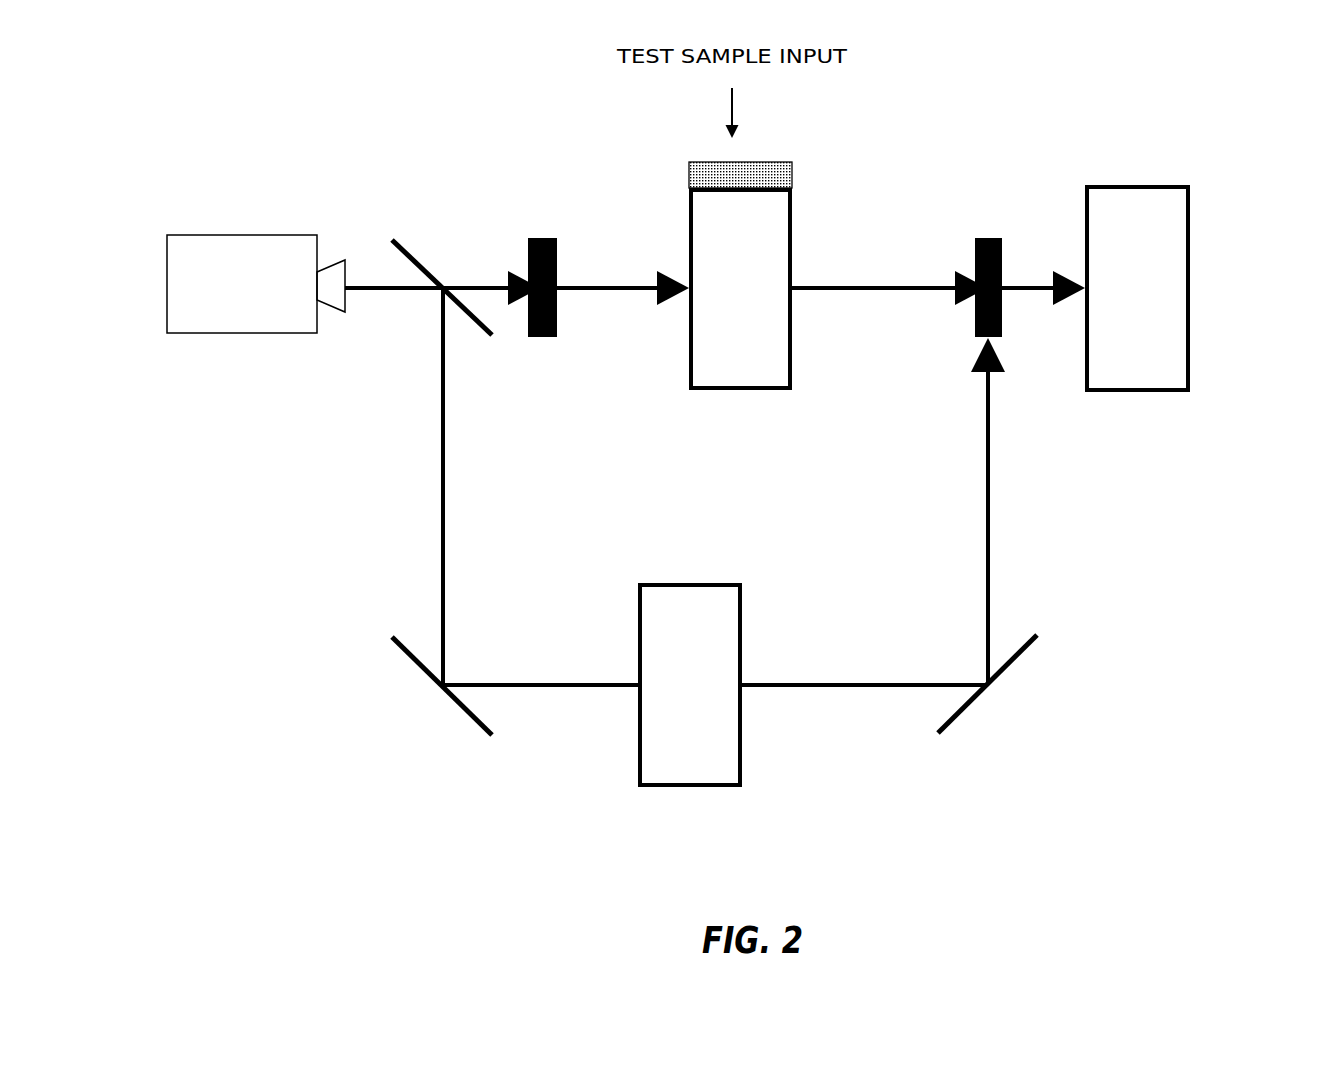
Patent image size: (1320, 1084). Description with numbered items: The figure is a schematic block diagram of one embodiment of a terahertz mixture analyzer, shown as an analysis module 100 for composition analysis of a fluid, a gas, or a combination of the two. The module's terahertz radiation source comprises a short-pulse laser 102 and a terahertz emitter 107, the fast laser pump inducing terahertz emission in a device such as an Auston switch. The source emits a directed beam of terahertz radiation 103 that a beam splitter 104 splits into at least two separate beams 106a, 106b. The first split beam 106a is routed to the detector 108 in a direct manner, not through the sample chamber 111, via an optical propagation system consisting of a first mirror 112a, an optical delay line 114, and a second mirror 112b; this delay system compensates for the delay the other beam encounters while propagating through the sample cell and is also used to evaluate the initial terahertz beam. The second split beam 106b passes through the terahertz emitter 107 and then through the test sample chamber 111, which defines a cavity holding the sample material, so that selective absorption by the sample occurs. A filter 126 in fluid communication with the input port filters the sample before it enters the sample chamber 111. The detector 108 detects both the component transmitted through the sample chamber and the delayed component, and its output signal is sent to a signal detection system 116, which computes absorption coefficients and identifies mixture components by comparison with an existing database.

The analysis module 100 is at (1089, 120).
The short-pulse laser 102 is at (195, 235).
The directed beam of terahertz radiation 103 is at (368, 290).
The beam splitter 104 is at (398, 238).
The first split beam 106a is at (448, 517).
The second split beam 106b is at (473, 283).
The terahertz emitter 107 is at (540, 337).
The detector 108 is at (972, 327).
The sample chamber 111 is at (750, 390).
The first mirror 112a is at (470, 713).
The second mirror 112b is at (1020, 653).
The optical delay line 114 is at (712, 583).
The signal detection system 116 is at (1175, 185).
The filter 126 is at (763, 163).